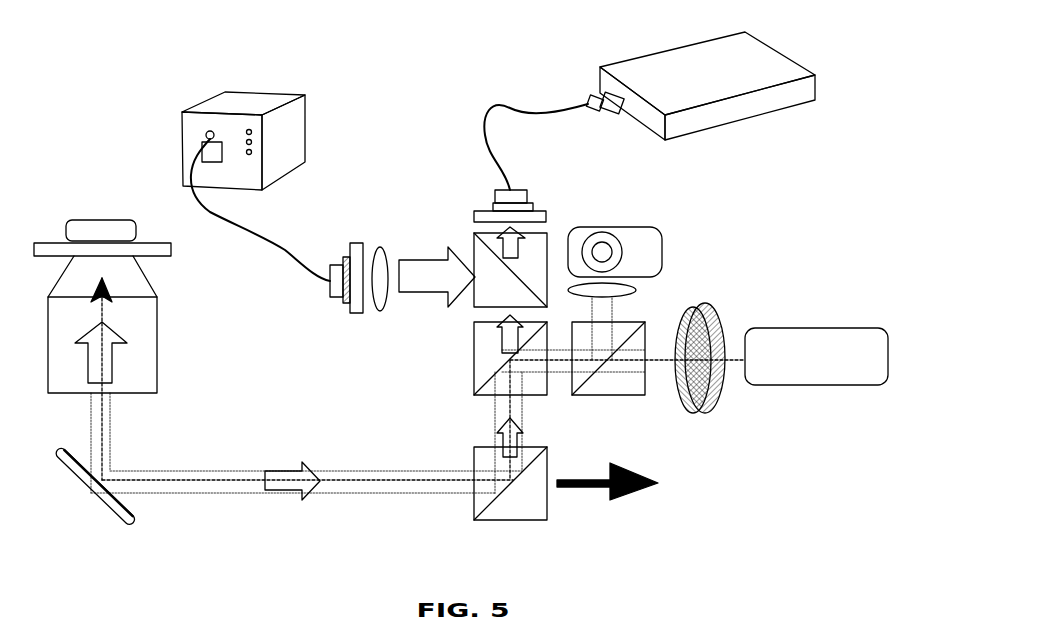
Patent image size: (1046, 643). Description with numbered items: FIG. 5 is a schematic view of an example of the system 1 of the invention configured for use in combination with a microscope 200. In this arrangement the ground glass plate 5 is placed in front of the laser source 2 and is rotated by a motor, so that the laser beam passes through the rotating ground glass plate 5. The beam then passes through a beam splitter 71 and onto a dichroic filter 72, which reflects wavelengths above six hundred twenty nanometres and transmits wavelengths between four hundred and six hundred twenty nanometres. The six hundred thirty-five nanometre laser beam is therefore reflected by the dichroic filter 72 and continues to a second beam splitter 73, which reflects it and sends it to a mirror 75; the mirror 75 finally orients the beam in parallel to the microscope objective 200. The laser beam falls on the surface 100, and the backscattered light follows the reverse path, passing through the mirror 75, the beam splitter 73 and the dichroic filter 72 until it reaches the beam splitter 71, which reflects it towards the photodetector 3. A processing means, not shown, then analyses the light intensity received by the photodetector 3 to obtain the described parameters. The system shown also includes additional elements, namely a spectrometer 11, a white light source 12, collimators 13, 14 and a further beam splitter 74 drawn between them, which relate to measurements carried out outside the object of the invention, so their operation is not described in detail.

The system 1 is at (112, 69).
The laser source 2 is at (816, 356).
The photodetector 3 is at (635, 248).
The ground glass plate 5 is at (718, 313).
The spectrometer 11 is at (683, 72).
The white light source 12 is at (262, 102).
The collimator 13 is at (337, 290).
The collimator 14 is at (503, 213).
The beam splitter 71 is at (607, 387).
The dichroic filter 72 is at (482, 352).
The second beam splitter 73 is at (512, 508).
The beam splitter 74 is at (490, 297).
The mirror 75 is at (117, 508).
The surface 100 is at (98, 232).
The microscope objective 200 is at (133, 327).